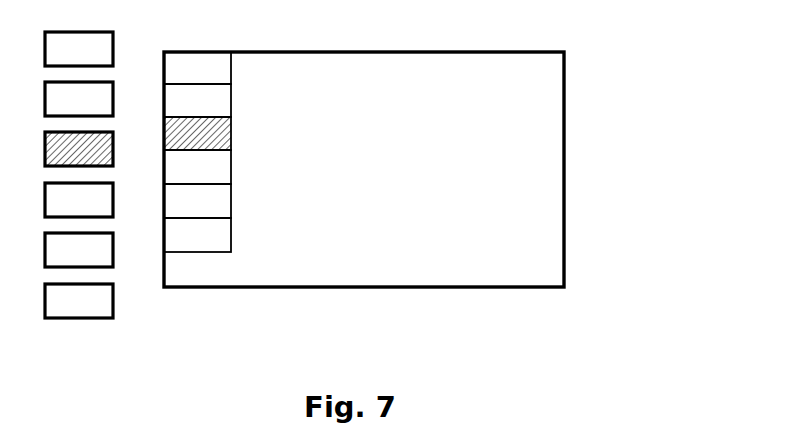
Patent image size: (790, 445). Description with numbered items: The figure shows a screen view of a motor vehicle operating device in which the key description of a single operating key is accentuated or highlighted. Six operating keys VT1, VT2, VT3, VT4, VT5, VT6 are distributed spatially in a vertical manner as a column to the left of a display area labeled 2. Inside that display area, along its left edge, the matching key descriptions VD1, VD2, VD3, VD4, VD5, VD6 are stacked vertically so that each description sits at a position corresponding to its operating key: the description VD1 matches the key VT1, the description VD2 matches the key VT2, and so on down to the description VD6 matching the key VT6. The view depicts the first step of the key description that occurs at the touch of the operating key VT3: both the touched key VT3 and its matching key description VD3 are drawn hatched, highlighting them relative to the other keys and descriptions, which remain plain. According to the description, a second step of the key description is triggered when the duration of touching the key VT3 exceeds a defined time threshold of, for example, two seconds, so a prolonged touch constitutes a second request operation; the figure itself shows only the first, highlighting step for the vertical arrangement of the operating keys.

The display screen 2 is at (529, 112).
The operating key VT1 is at (79, 49).
The operating key VT2 is at (79, 99).
The operating key VT3 is at (79, 149).
The operating key VT4 is at (79, 200).
The operating key VT5 is at (79, 250).
The operating key VT6 is at (79, 301).
The key description VD1 is at (197, 68).
The key description VD2 is at (197, 100).
The key description VD3 is at (197, 133).
The key description VD4 is at (197, 167).
The key description VD5 is at (197, 201).
The key description VD6 is at (197, 235).